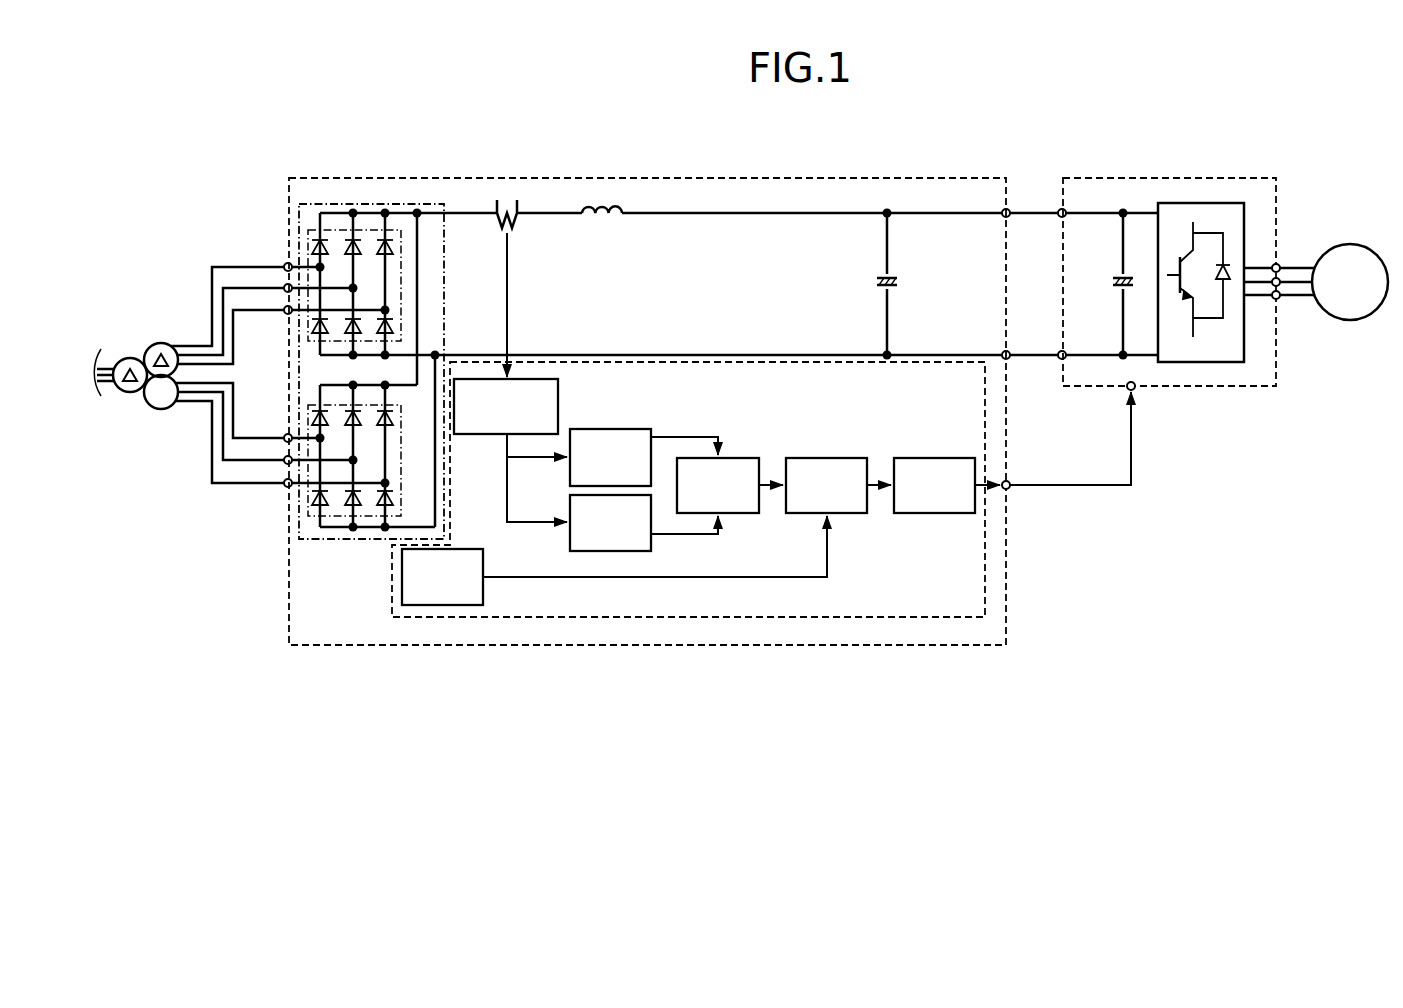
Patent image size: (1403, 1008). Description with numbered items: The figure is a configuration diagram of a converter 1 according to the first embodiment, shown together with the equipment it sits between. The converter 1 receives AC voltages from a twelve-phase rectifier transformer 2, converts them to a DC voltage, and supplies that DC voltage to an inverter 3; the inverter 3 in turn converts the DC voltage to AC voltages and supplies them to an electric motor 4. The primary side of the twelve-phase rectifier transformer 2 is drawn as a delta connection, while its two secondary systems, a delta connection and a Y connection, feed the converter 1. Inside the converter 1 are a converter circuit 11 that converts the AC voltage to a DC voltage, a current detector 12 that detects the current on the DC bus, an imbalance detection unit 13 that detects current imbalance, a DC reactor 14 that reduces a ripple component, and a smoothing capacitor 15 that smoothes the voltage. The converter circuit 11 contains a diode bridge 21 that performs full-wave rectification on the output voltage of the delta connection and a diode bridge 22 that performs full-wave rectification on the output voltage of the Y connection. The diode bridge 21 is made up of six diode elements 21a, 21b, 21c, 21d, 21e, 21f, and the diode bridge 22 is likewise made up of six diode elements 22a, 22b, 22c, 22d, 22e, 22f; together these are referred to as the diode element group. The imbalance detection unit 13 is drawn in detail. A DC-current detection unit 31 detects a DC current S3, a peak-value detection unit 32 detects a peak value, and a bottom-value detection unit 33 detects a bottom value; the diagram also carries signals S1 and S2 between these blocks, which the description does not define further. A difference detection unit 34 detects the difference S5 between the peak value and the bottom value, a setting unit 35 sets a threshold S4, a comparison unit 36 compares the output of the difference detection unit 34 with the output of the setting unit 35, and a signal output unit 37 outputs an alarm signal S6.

The converter 1 is at (952, 178).
The 12-phase rectifier transformer 2 is at (129, 357).
The inverter 3 is at (1221, 178).
The electric motor 4 is at (1345, 244).
The converter circuit 11 is at (391, 202).
The current detector 12 is at (497, 205).
The imbalance detection unit 13 is at (985, 560).
The DC reactor 14 is at (597, 206).
The smoothing capacitor 15 is at (897, 281).
The diode bridge 21 is at (403, 282).
The diode element 21a is at (312, 244).
The diode element 21b is at (313, 322).
The diode element 21c is at (344, 241).
The diode element 21d is at (351, 335).
The diode element 21e is at (393, 243).
The diode element 21f is at (393, 324).
The diode bridge 22 is at (403, 484).
The diode element 22a is at (313, 416).
The diode element 22b is at (313, 496).
The diode element 22c is at (344, 414).
The diode element 22d is at (351, 505).
The diode element 22e is at (393, 418).
The diode element 22f is at (393, 498).
The DC-current detection unit 31 is at (558, 399).
The peak-value detection unit 32 is at (596, 428).
The bottom-value detection unit 33 is at (569, 543).
The difference detection unit 34 is at (733, 456).
The setting unit 35 is at (483, 585).
The comparison unit 36 is at (812, 456).
The signal output unit 37 is at (921, 456).
The peak value signal S1 is at (676, 437).
The bottom value signal S2 is at (676, 533).
The DC current S3 is at (507, 492).
The threshold S4 is at (742, 577).
The difference S5 is at (766, 478).
The alarm signal S6 is at (1050, 484).